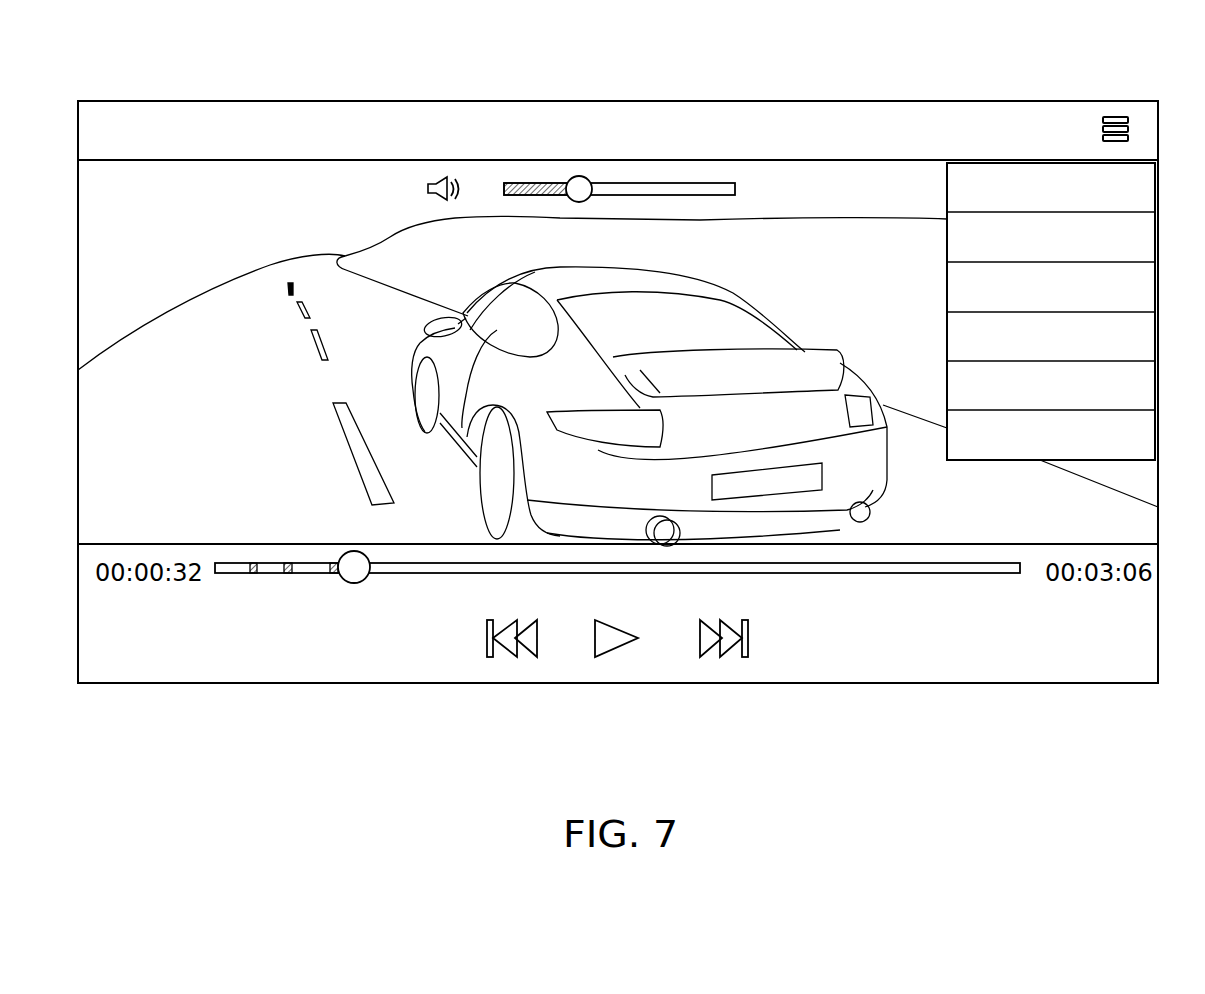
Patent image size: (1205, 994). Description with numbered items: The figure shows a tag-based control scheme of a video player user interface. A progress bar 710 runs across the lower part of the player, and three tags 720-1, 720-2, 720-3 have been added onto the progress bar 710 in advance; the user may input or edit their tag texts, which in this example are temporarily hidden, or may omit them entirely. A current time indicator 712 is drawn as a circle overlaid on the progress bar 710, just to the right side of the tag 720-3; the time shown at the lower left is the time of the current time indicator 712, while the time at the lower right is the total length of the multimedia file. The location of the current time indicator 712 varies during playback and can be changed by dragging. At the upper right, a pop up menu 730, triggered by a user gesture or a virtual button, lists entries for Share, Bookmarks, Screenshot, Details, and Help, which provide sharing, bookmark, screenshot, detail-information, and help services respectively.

The progress bar 710 is at (447, 574).
The current time indicator 712 is at (354, 584).
The tag 720-1 is at (254, 574).
The tag 720-2 is at (288, 574).
The tag 720-3 is at (333, 574).
The pop up menu 730 is at (947, 243).